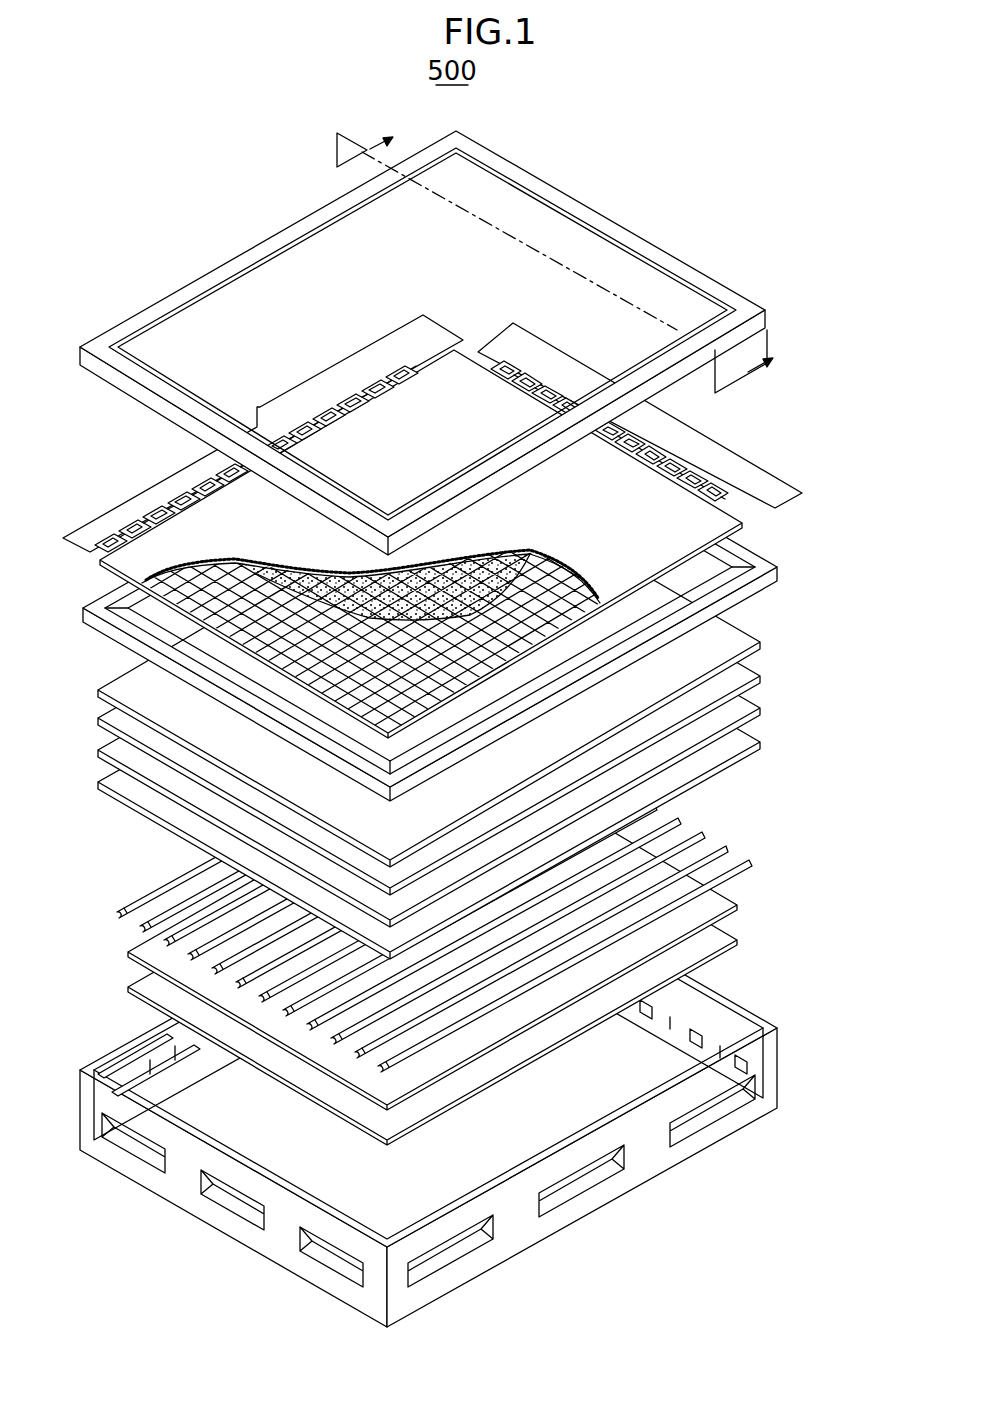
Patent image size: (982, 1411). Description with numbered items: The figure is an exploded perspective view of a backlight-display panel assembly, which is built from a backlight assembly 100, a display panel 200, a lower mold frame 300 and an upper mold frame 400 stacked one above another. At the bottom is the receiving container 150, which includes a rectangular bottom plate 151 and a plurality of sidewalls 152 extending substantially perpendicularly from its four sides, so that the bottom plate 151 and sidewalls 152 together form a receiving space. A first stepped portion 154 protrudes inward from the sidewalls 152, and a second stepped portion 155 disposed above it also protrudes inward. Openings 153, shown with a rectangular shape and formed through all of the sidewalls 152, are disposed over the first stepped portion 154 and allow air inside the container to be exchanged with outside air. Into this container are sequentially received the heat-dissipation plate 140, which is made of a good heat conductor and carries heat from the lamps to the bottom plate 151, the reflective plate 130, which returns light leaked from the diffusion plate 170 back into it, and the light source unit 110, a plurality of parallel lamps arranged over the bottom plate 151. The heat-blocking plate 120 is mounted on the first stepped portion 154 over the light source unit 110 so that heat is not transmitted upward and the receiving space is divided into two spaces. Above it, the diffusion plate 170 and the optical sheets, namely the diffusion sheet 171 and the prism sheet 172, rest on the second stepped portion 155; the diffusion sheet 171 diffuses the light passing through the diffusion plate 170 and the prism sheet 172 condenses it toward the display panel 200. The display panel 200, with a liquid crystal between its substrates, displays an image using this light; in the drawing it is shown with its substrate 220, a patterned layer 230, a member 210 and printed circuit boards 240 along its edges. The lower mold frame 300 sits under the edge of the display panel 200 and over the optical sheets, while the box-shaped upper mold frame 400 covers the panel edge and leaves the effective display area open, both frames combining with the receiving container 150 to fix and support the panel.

The upper mold frame 400 is at (212, 263).
The printed circuit board 240 is at (437, 316).
The display panel 200 is at (441, 489).
The display panel 220 is at (461, 544).
The mesh pattern layer 230 is at (497, 560).
The mold frame 210 is at (312, 688).
The lower mold frame 300 is at (466, 594).
The prism sheet 172 is at (466, 669).
The diffusion sheet 171 is at (762, 676).
The diffusion plate 170 is at (762, 708).
The heat-blocking plate 120 is at (762, 742).
The light source unit 110 is at (741, 838).
The backlight assembly 100 is at (476, 899).
The reflective plate 130 is at (742, 906).
The heat-dissipation plate 140 is at (742, 942).
The receiving container 150 is at (452, 1089).
The bottom plate 151 is at (605, 1085).
The sidewalls 152 is at (652, 1175).
The openings 153 is at (704, 1110).
The first stepped portion 154 is at (200, 1058).
The second stepped portion 155 is at (158, 1049).